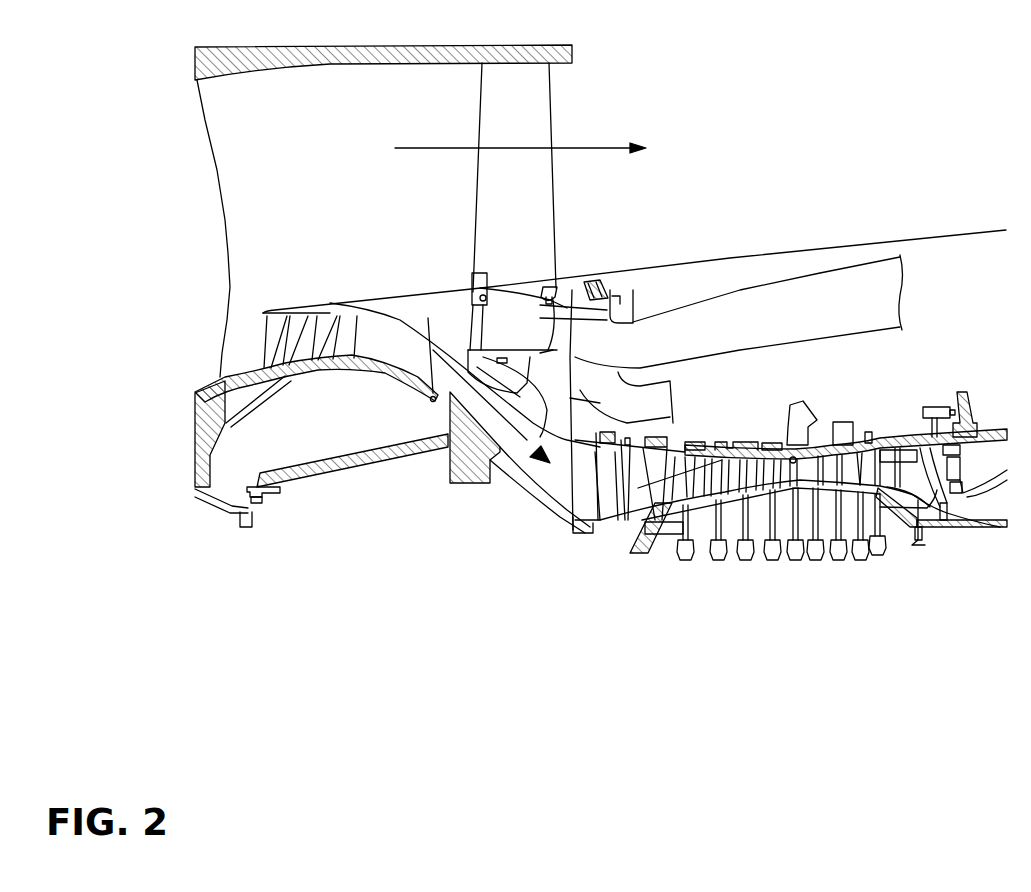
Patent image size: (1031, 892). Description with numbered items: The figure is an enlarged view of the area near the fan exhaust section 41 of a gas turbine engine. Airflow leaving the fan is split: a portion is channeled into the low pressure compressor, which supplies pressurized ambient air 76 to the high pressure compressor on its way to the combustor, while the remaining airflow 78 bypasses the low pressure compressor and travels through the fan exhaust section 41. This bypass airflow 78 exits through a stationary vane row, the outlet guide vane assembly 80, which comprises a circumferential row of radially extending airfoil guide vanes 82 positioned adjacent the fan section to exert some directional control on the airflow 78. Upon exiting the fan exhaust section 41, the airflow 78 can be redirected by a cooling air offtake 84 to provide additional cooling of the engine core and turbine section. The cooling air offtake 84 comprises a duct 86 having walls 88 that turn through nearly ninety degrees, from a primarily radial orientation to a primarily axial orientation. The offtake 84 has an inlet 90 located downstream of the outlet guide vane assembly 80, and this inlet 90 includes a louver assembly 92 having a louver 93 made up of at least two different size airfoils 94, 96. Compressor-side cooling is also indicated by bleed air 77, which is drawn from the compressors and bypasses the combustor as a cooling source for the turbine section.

The fan exhaust section 41 is at (594, 99).
The pressurized ambient air 76 is at (537, 350).
The bleed air 77 is at (717, 440).
The airflow 78 is at (425, 148).
The outlet guide vane assembly 80 is at (554, 202).
The airfoil guide vanes 82 is at (384, 216).
The cooling air offtake 84 is at (700, 310).
The duct 86 is at (858, 280).
The walls 88 is at (473, 282).
The inlet 90 is at (600, 283).
The louver assembly 92 is at (583, 264).
The louver 93 is at (578, 278).
The airfoil 94 is at (490, 263).
The airfoil 96 is at (620, 300).